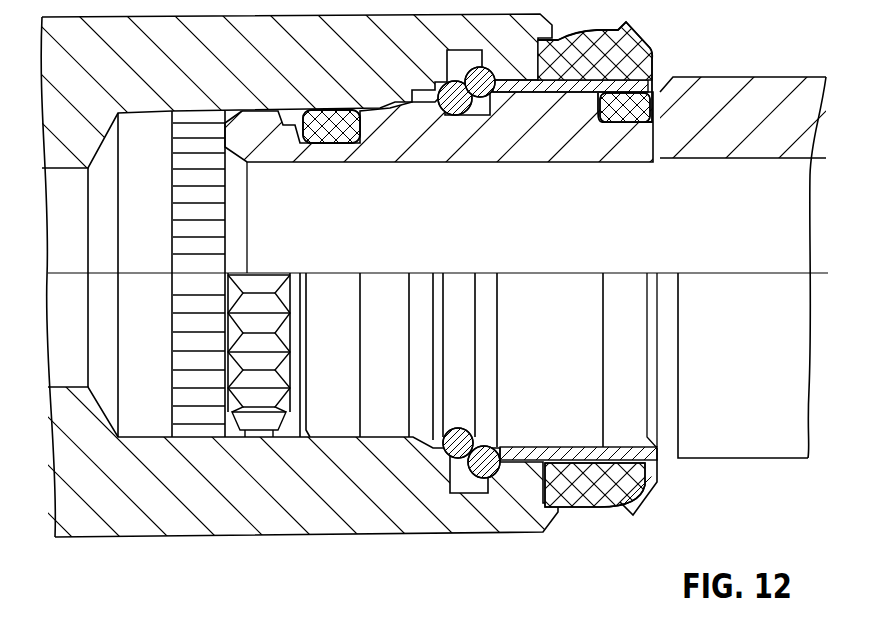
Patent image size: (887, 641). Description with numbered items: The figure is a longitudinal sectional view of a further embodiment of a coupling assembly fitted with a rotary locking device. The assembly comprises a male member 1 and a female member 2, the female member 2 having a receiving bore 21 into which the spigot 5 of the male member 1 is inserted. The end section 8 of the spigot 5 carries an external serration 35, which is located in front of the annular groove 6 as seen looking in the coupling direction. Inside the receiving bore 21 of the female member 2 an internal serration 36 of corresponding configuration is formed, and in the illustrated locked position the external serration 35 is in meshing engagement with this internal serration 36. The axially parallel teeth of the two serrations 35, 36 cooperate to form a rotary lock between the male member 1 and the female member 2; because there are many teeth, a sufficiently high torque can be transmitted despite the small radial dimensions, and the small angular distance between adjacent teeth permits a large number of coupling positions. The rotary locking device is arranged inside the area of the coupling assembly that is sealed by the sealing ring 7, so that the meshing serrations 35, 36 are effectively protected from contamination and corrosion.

The male member 1 is at (729, 460).
The female member 2 is at (88, 522).
The receiving bore 21 is at (121, 355).
The internal serration 36 is at (205, 422).
The external serration 35 is at (262, 422).
The annular groove 6 is at (297, 430).
The sealing ring 7 is at (343, 420).
The end section 8 is at (390, 420).
The spigot 5 is at (568, 428).